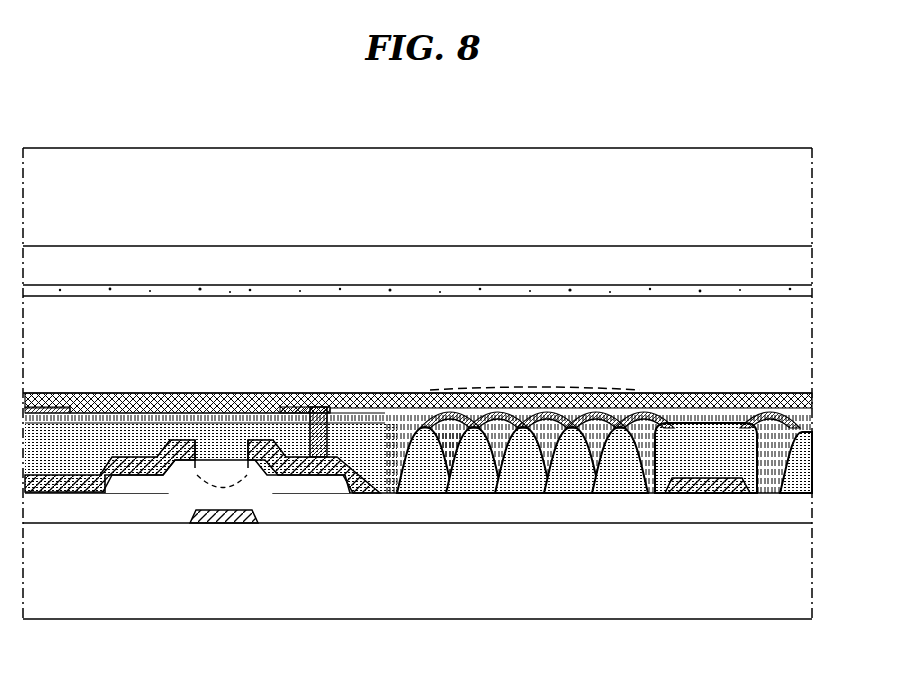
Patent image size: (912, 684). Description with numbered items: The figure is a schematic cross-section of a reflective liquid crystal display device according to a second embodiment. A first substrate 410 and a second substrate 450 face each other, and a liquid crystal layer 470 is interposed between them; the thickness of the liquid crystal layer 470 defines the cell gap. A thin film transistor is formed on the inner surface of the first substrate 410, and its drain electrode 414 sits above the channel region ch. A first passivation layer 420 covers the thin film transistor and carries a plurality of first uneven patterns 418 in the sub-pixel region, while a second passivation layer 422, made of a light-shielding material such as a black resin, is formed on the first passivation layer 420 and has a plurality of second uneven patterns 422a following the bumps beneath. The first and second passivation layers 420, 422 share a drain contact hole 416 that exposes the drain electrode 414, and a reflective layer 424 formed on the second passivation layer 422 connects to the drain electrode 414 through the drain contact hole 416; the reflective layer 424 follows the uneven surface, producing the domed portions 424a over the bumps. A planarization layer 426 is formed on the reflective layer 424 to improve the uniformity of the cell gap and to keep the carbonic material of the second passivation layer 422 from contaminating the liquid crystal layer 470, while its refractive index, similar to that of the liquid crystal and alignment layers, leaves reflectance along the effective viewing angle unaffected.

The first substrate 410 is at (413, 581).
The drain electrode 414 is at (270, 440).
The drain contact hole 416 is at (319, 389).
The first uneven patterns 418 is at (435, 428).
The first passivation layer 420 is at (108, 430).
The second passivation layer 422 is at (222, 418).
The second uneven patterns 422a is at (596, 420).
The reflective layer 424 is at (50, 407).
The pixel electrode portion over pillars 424a is at (560, 406).
The planarization layer 426 is at (168, 400).
The second substrate 450 is at (409, 201).
The liquid crystal layer 470 is at (812, 296).
The channel region ch is at (222, 492).